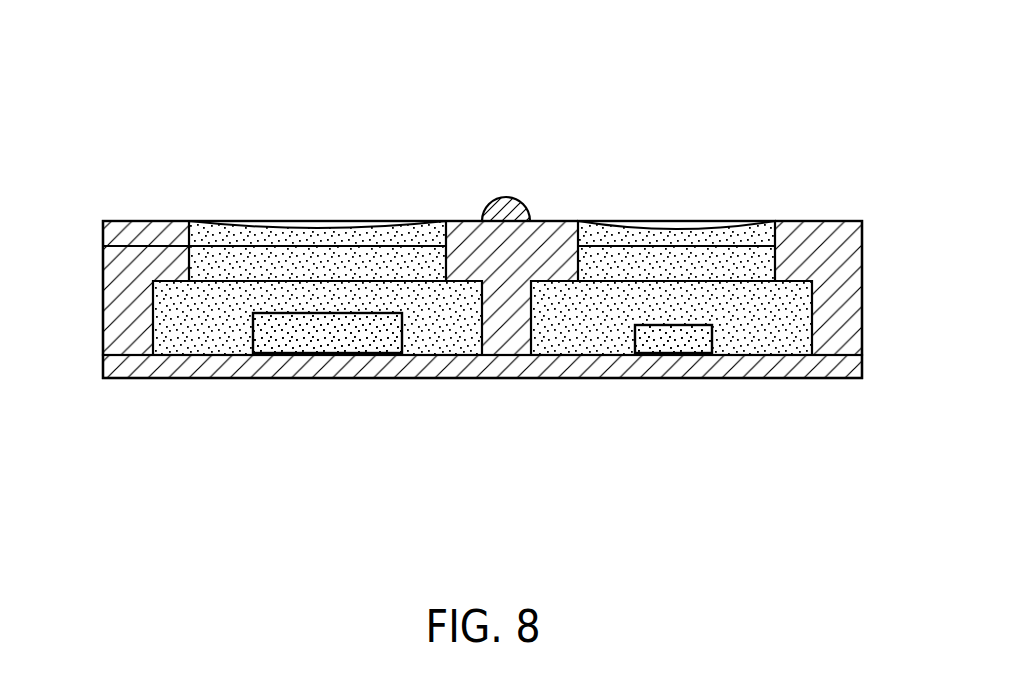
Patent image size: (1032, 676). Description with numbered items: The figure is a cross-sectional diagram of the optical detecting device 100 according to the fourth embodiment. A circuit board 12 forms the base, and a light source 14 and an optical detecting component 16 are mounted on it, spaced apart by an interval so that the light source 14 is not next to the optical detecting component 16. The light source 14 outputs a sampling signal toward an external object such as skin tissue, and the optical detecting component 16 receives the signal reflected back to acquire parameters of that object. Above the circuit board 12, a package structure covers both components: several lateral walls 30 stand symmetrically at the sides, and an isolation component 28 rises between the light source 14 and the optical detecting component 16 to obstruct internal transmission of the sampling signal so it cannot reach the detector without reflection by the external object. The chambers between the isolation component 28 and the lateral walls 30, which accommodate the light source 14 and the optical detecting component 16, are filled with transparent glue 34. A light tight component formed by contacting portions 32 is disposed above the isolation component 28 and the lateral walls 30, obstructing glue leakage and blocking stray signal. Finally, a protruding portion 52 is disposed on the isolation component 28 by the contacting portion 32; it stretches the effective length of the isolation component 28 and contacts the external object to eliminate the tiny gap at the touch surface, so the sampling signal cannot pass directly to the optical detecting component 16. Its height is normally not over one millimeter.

The optical detecting device 100 is at (786, 82).
The circuit board 12 is at (757, 365).
The light source 14 is at (680, 332).
The optical detecting component 16 is at (327, 333).
The isolation component 28 is at (508, 307).
The lateral wall 30 is at (133, 307).
The contacting portion 32 is at (130, 233).
The transparent glue 34 is at (168, 297).
The protruding portion 52 is at (505, 213).